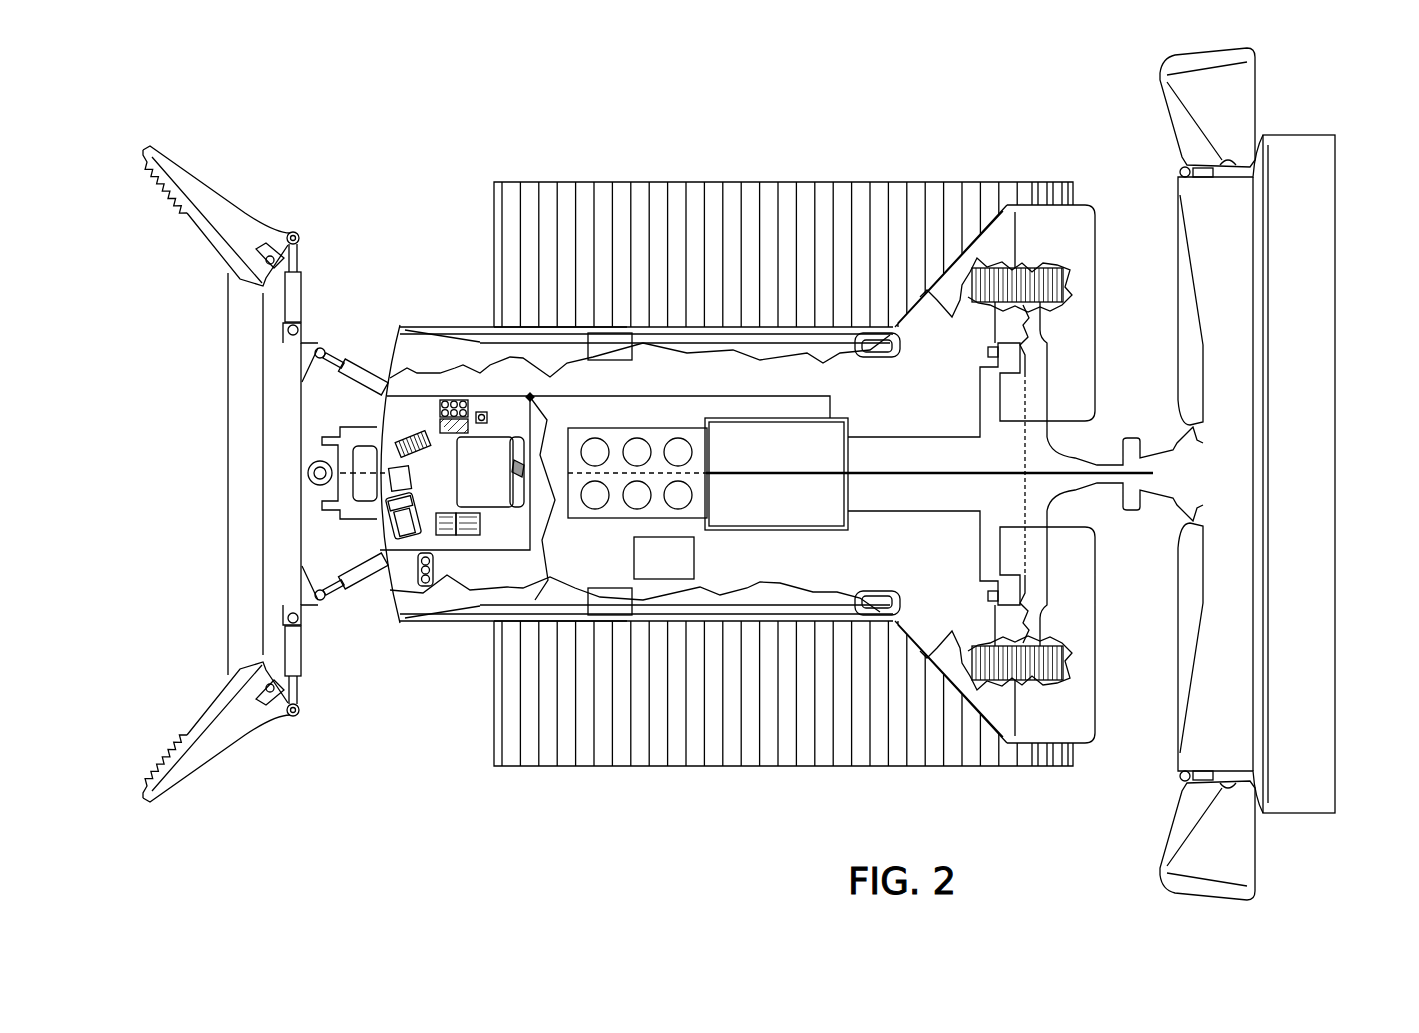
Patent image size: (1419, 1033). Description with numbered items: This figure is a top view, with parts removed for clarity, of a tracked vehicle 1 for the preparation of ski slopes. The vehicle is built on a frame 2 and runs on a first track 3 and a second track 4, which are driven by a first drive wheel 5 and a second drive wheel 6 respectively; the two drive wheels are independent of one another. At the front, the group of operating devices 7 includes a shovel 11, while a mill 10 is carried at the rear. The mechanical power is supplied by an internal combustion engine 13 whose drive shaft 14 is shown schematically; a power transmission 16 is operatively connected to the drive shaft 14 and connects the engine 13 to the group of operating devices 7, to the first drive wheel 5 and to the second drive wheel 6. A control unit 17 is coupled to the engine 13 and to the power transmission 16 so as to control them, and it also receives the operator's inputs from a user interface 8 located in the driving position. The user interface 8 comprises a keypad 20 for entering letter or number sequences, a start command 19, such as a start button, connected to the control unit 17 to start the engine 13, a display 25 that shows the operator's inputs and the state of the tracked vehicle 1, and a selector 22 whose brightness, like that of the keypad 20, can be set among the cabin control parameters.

The tracked vehicle 1 is at (333, 745).
The frame 2 is at (982, 530).
The first track 3 is at (638, 198).
The second track 4 is at (715, 725).
The first drive wheel 5 is at (1027, 268).
The second drive wheel 6 is at (1050, 685).
The group of operating devices 7 is at (143, 651).
The user interface 8 is at (410, 424).
The mill 10 is at (1312, 467).
The shovel 11 is at (224, 488).
The internal combustion engine 13 is at (620, 520).
The drive shaft 14 is at (578, 518).
The power transmission 16 is at (828, 458).
The control unit 17 is at (665, 556).
The start command 19 is at (480, 412).
The keypad 20 is at (455, 397).
The selector 22 is at (455, 433).
The display 25 is at (408, 523).